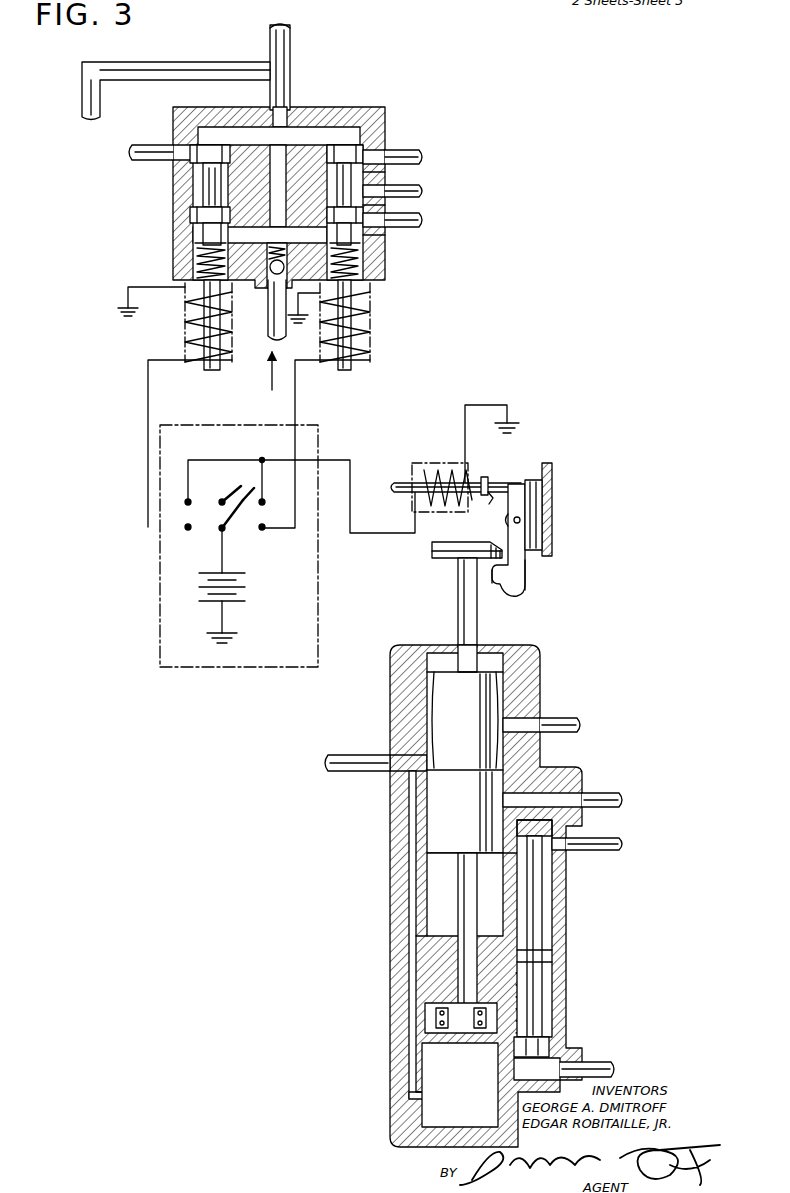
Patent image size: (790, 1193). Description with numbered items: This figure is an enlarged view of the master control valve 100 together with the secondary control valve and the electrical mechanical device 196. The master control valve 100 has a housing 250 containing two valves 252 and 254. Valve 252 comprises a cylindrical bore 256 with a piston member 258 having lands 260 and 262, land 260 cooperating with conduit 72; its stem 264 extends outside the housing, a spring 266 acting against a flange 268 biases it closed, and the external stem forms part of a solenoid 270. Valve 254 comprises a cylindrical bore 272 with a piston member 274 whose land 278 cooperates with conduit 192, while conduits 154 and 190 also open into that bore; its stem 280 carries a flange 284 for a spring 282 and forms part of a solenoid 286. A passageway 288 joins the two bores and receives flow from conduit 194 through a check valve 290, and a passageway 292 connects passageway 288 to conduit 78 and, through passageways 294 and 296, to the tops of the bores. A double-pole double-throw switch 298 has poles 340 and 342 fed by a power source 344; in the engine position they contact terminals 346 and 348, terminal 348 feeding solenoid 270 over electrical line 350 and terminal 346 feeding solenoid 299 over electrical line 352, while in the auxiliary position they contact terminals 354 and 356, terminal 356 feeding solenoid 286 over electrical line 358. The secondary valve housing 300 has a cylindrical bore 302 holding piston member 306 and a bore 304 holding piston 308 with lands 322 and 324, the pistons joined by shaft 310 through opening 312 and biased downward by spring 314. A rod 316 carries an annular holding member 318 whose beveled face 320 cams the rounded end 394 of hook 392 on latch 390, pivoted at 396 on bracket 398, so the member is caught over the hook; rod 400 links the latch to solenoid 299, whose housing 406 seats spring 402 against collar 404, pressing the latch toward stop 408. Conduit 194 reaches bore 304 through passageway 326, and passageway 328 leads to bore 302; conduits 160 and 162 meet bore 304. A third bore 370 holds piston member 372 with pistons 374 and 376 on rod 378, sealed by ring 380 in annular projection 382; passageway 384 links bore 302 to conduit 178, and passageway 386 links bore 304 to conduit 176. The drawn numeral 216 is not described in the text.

The conduit 72 is at (128, 150).
The conduit 78 is at (291, 38).
The master control valve 100 is at (386, 118).
The conduit 154 is at (424, 155).
The conduit 160 is at (572, 724).
The conduit 162 is at (612, 798).
The conduit 176 is at (622, 845).
The conduit 178 is at (605, 1068).
The conduit 190 is at (424, 194).
The conduit 192 is at (424, 225).
The conduit 194 is at (276, 333).
The electrical mechanical device 196 is at (492, 456).
The valve spool 216 is at (348, 148).
The housing 250 is at (333, 128).
The valve 252 is at (192, 130).
The valve 254 is at (386, 132).
The cylindrical bore 256 is at (198, 187).
The piston member 258 is at (200, 190).
The land 260 is at (207, 150).
The land 262 is at (200, 218).
The stem 264 is at (195, 333).
The spring 266 is at (200, 262).
The flange 268 is at (192, 243).
The solenoid 270 is at (185, 350).
The cylindrical bore 272 is at (386, 180).
The piston member 274 is at (386, 211).
The land 278 is at (372, 235).
The stem 280 is at (365, 305).
The spring 282 is at (356, 265).
The flange 284 is at (360, 252).
The solenoid 286 is at (372, 331).
The passageway 288 is at (240, 233).
The check valve 290 is at (257, 257).
The passageway 292 is at (270, 168).
The passageway 294 is at (250, 128).
The passageway 296 is at (302, 128).
The double-pole double-throw switch 298 is at (234, 484).
The solenoid 299 is at (434, 470).
The housing 300 is at (390, 845).
The cylindrical bore 302 is at (425, 1072).
The bore 304 is at (430, 692).
The piston member 306 is at (421, 1041).
The piston 308 is at (430, 862).
The shaft 310 is at (460, 890).
The opening 312 is at (455, 960).
The spring 314 is at (425, 1020).
The rod 316 is at (462, 586).
The annular holding member 318 is at (436, 556).
The rounded or beveled face 320 is at (432, 545).
The land 322 is at (445, 818).
The land 324 is at (440, 650).
The passageway 326 is at (410, 762).
The passageway 328 is at (411, 797).
The pole 340 is at (228, 498).
The pole 342 is at (224, 531).
The power source 344 is at (246, 596).
The terminal 346 is at (186, 502).
The terminal 348 is at (186, 527).
The electrical line 350 is at (148, 388).
The electrical line 352 is at (319, 445).
The terminal 354 is at (262, 503).
The terminal 356 is at (264, 531).
The electrical line 358 is at (297, 396).
The third bore 370 is at (550, 890).
The piston member 372 is at (546, 907).
The piston 374 is at (550, 842).
The piston 376 is at (537, 1052).
The rod 378 is at (537, 922).
The sealing ring 380 is at (549, 958).
The annular projection 382 is at (549, 944).
The passageway 384 is at (497, 1082).
The passageway 386 is at (508, 857).
The latch 390 is at (522, 545).
The hook 392 is at (494, 584).
The rounded end 394 is at (516, 592).
The pivot 396 is at (521, 520).
The bracket 398 is at (540, 496).
The rod 400 is at (498, 487).
The spring 402 is at (480, 498).
The fixed collar 404 is at (490, 502).
The housing 406 is at (412, 465).
The stop 408 is at (552, 472).